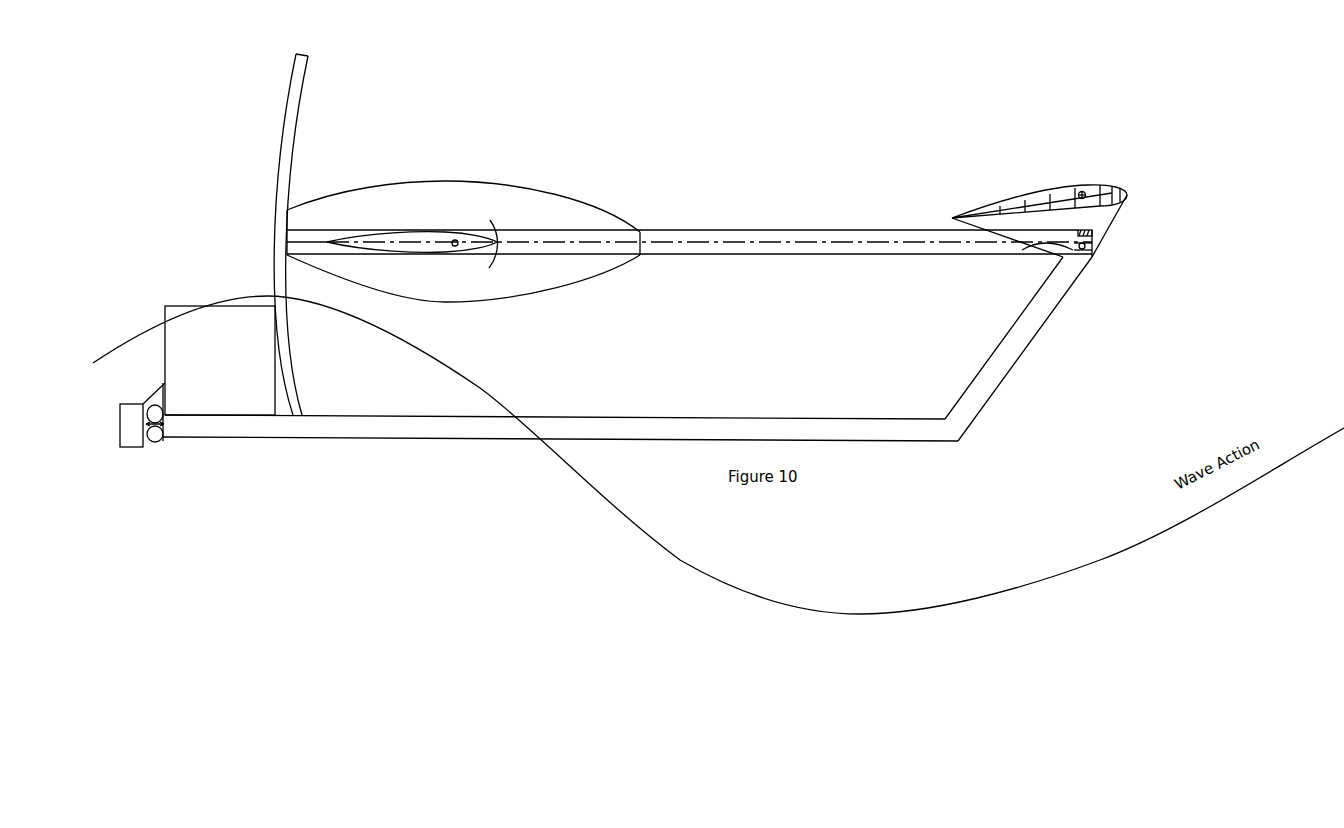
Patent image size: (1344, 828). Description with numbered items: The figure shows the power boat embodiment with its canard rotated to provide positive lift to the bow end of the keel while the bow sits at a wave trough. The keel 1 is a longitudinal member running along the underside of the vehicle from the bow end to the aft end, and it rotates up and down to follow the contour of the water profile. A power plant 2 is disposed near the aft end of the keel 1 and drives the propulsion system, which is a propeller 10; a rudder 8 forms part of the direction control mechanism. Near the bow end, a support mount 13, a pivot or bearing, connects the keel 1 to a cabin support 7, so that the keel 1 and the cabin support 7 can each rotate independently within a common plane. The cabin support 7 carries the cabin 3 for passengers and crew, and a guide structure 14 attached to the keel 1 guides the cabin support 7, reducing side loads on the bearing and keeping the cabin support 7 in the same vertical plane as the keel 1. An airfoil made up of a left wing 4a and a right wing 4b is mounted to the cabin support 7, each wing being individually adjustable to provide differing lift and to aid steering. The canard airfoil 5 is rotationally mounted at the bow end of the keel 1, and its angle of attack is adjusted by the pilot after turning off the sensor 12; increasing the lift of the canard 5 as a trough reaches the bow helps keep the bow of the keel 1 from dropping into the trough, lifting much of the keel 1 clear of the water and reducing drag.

The keel 1 is at (540, 417).
The power plant 2 is at (220, 360).
The cabin 3 is at (549, 194).
The left wing 4a is at (418, 230).
The right wing 4b is at (493, 244).
The canard airfoil 5 is at (1100, 185).
The cabin support 7 is at (712, 230).
The rudder 8 is at (142, 415).
The propeller 10 is at (155, 443).
The sensor 12 is at (1097, 231).
The support mount 13 is at (1098, 247).
The guide structure 14 is at (292, 163).